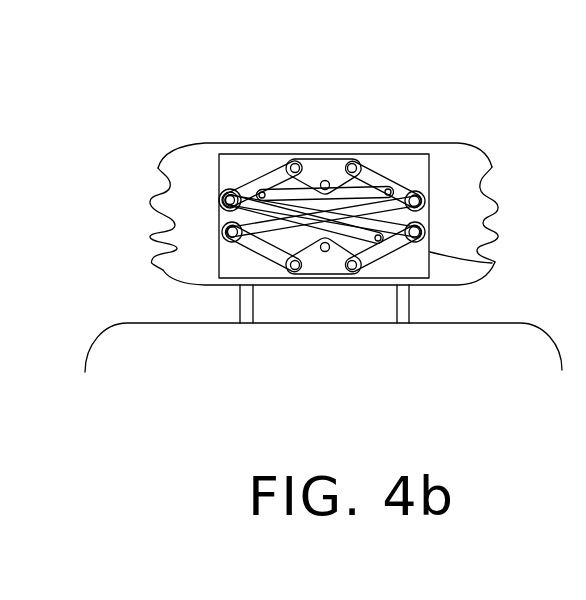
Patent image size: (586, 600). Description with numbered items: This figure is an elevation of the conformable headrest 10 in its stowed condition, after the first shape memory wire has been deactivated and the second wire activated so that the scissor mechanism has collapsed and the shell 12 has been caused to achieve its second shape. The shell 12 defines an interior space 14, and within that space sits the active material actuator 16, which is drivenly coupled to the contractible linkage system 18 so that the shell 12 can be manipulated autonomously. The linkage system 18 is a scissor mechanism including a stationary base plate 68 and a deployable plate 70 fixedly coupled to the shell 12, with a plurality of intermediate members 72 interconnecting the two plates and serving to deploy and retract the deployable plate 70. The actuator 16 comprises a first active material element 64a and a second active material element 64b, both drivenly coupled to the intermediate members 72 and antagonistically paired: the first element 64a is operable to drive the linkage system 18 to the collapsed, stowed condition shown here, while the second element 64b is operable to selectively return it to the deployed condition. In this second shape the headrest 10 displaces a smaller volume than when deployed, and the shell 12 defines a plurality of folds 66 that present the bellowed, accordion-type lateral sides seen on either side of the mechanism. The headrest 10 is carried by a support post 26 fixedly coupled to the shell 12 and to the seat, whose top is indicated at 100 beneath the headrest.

The headrest 10 is at (236, 96).
The shell 12 is at (180, 150).
The interior space 14 is at (421, 274).
The active material actuator 16 is at (248, 226).
The linkage system 18 is at (443, 218).
The support post 26 is at (409, 305).
The first active material element 64a is at (245, 192).
The second active material element 64b is at (292, 187).
The fold 66 is at (481, 189).
The base plate 68 is at (290, 266).
The deployable plate 70 is at (356, 173).
The intermediate members 72 is at (367, 254).
The base 100 is at (160, 322).